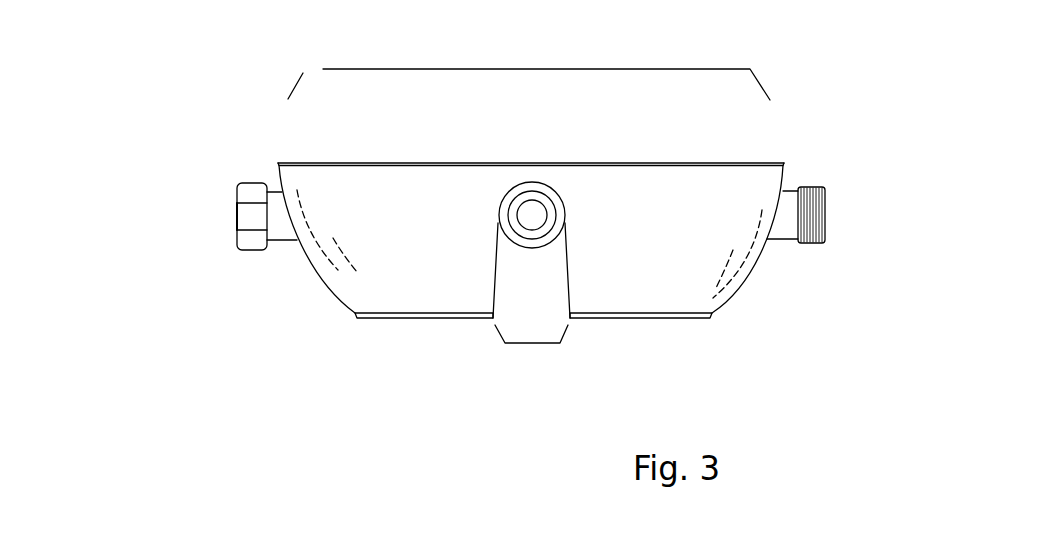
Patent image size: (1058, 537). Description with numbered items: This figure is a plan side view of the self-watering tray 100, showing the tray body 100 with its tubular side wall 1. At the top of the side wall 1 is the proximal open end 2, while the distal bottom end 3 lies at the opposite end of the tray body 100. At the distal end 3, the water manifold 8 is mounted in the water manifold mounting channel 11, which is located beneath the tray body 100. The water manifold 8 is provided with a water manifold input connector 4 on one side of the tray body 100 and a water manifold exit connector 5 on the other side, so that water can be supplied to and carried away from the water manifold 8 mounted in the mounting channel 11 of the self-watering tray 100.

The self-watering tray 100 is at (503, 230).
The side wall 1 is at (690, 268).
The proximal (top) open end 2 is at (536, 68).
The distal (bottom) end 3 is at (408, 320).
The water manifold input connector 4 is at (248, 220).
The water manifold exit connector 5 is at (825, 190).
The water manifold 8 is at (282, 232).
The water manifold mounting channel 11 is at (533, 347).